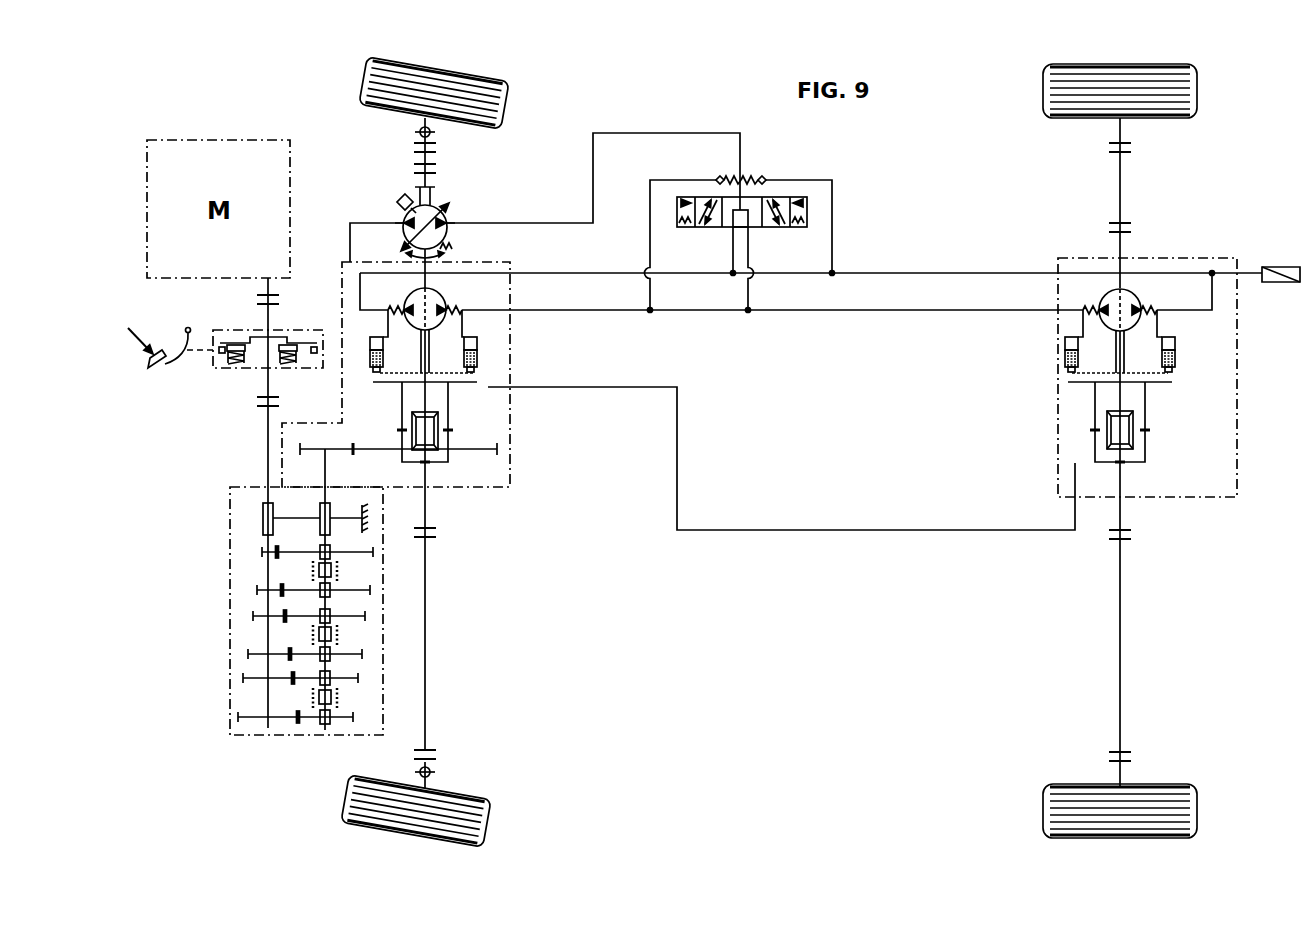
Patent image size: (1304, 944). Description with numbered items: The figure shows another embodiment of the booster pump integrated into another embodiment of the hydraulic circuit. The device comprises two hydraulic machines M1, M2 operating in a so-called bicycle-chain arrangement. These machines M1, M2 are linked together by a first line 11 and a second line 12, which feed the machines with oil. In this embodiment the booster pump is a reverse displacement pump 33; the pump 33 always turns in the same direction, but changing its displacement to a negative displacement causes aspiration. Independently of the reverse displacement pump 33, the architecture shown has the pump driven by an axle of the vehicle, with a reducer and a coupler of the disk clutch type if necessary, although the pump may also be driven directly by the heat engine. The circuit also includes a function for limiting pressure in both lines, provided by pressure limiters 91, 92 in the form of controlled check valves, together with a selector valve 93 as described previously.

The first line 11 is at (932, 311).
The second line 12 is at (930, 272).
The reverse displacement pump 33 is at (449, 212).
The pressure limiter 91 is at (716, 178).
The pressure limiter 92 is at (766, 178).
The selector valve 93 is at (767, 230).
The hydraulic machine M1 is at (442, 290).
The hydraulic machine M2 is at (1137, 290).